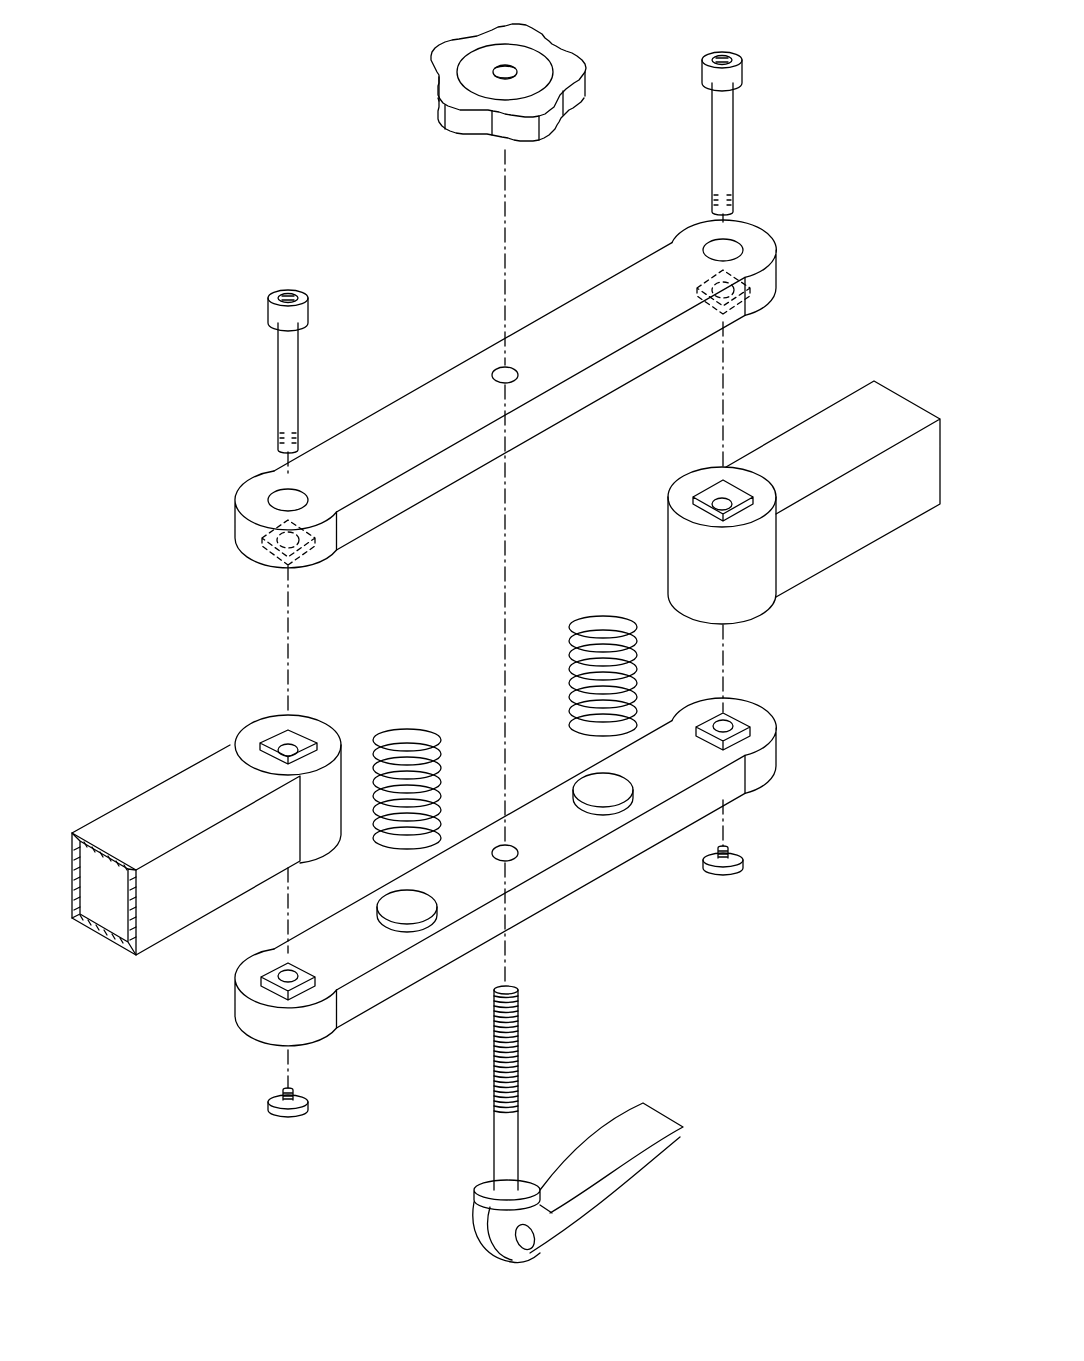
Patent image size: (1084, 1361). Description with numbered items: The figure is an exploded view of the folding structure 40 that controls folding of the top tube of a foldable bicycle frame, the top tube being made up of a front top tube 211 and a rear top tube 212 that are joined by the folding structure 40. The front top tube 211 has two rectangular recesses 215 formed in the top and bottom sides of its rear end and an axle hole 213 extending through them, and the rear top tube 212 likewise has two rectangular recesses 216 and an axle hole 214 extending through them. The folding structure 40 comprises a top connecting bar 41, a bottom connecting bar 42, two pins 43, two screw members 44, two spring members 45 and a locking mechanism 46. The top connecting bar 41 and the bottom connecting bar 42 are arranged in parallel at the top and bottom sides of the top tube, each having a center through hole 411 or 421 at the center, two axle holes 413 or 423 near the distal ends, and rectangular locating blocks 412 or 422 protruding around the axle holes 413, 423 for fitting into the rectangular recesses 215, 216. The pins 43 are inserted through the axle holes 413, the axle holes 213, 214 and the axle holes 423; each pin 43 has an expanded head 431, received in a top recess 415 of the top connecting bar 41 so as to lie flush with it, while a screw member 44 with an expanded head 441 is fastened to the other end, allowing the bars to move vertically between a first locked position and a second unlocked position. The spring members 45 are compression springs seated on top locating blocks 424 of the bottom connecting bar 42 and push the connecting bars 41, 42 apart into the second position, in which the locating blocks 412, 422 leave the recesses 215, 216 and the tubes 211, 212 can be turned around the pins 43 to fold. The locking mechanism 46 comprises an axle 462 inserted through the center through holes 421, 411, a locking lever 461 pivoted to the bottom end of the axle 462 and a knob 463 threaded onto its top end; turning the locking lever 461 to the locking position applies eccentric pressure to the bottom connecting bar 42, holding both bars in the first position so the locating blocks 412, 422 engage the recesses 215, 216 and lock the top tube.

The folding structure 40 is at (208, 157).
The top connecting bar 41 is at (425, 392).
The center through hole 411 is at (508, 366).
The rectangular locating blocks 412 is at (752, 283).
The axle holes 413 is at (729, 300).
The top recesses 415 is at (737, 245).
The bottom connecting bar 42 is at (542, 867).
The center through hole 421 is at (504, 845).
The rectangular locating blocks 422 is at (752, 731).
The axle holes 423 is at (726, 721).
The top locating blocks 424 is at (607, 800).
The pins 43 is at (733, 156).
The expanded head 431 is at (741, 73).
The screw members 44 is at (728, 847).
The expanded head 441 is at (732, 873).
The spring members 45 is at (402, 740).
The locking mechanism 46 is at (352, 1148).
The locking lever 461 is at (560, 1232).
The axle 462 is at (502, 1142).
The knob 463 is at (445, 58).
The front top tube 211 is at (130, 810).
The rear top tube 212 is at (871, 380).
The axle hole 213 is at (272, 740).
The axle hole 214 is at (720, 498).
The rectangular recesses 215 is at (296, 738).
The rectangular recesses 216 is at (702, 486).